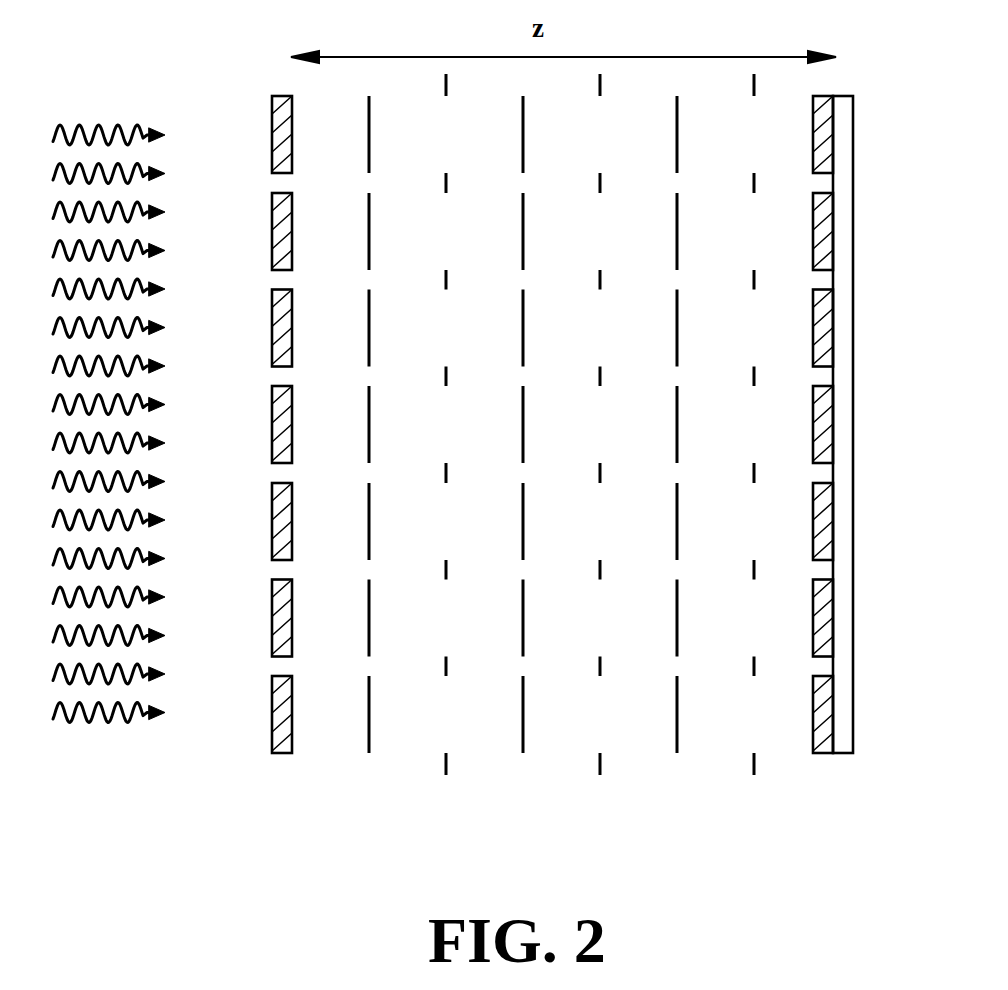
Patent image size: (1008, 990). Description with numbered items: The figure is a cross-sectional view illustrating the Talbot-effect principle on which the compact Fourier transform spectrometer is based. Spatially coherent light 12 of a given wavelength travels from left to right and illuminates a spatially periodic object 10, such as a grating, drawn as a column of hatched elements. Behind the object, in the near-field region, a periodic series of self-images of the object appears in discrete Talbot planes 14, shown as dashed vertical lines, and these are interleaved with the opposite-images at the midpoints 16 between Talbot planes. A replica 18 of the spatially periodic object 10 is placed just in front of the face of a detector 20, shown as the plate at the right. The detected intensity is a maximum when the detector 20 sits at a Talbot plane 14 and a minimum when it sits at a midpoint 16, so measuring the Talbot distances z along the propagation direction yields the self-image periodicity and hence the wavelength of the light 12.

The spatially periodic object 10 is at (292, 733).
The spatially coherent light 12 is at (78, 735).
The Talbot plane 14 is at (600, 772).
The opposite-image midpoint 16 is at (523, 733).
The replica of the spatially periodic object 18 is at (813, 733).
The detector 20 is at (853, 712).